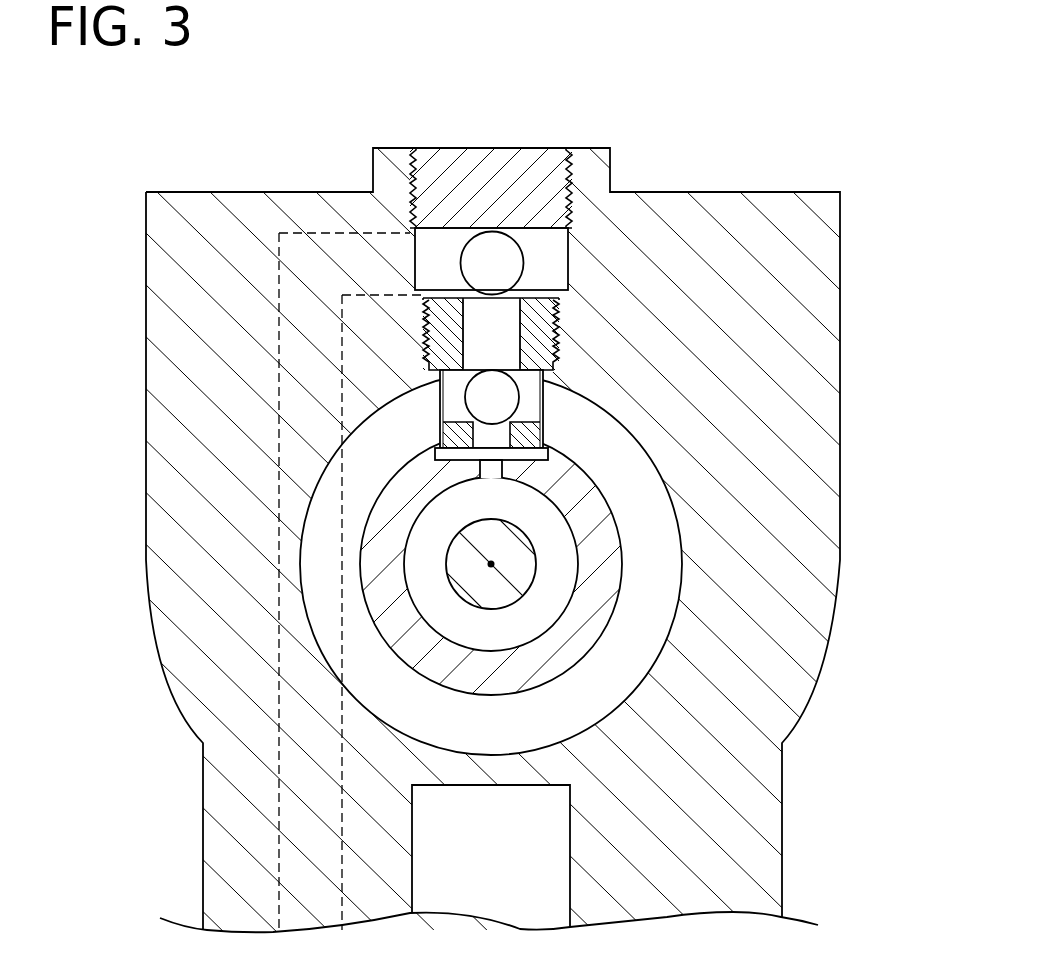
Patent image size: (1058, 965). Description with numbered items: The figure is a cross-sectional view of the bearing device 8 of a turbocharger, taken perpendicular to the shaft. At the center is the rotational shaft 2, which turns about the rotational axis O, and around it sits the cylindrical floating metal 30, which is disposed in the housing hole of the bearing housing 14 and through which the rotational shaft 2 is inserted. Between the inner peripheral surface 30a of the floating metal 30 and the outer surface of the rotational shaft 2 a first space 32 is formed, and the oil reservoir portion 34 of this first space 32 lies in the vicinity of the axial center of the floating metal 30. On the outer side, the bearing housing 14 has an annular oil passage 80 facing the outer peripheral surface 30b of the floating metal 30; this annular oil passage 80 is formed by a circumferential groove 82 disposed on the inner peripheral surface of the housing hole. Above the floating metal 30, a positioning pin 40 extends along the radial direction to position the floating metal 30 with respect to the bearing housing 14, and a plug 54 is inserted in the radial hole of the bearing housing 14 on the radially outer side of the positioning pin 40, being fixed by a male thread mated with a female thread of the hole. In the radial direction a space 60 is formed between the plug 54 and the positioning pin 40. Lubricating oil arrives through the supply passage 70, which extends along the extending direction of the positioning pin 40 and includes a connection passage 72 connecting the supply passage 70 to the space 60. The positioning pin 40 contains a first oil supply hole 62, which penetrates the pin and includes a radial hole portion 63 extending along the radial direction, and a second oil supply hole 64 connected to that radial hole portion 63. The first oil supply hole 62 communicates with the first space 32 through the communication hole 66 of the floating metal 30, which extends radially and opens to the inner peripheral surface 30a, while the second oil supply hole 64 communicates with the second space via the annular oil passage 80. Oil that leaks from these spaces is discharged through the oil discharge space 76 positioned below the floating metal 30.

The bearing device 8 is at (843, 127).
The bearing housing 14 is at (823, 303).
The plug 54 is at (523, 158).
The space 60 is at (542, 260).
The connection passage 72 is at (350, 255).
The supply passage 70 is at (308, 465).
The positioning pin 40 is at (341, 278).
The second oil supply hole 64 is at (455, 378).
The radial hole portion 63 is at (695, 416).
The first oil supply hole 62 is at (695, 416).
The communication hole 66 is at (492, 438).
The floating metal 30 is at (513, 564).
The inner peripheral surface 30a is at (566, 557).
The outer peripheral surface 30b is at (620, 612).
The rotational shaft 2 is at (513, 555).
The oil reservoir portion 34 is at (478, 582).
The first space 32 is at (478, 582).
The circumferential groove 82 is at (521, 582).
The annular oil passage 80 is at (395, 697).
The oil discharge space 76 is at (508, 868).
The rotational axis O is at (491, 564).